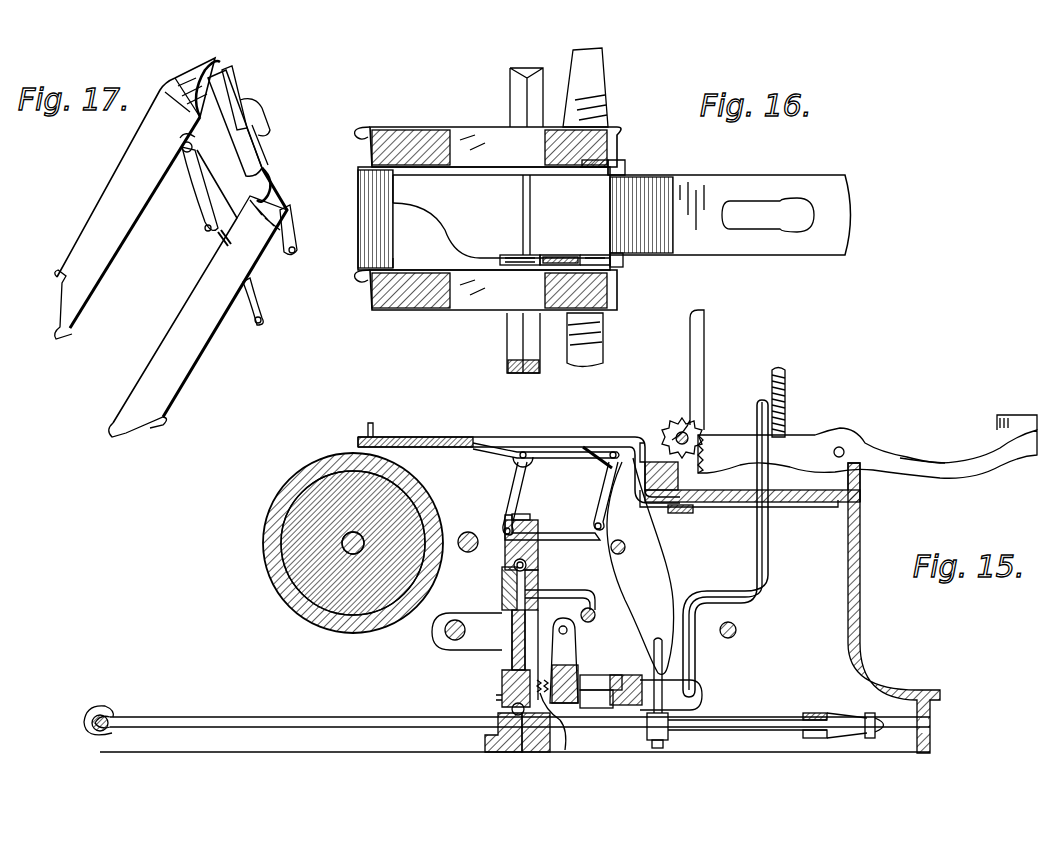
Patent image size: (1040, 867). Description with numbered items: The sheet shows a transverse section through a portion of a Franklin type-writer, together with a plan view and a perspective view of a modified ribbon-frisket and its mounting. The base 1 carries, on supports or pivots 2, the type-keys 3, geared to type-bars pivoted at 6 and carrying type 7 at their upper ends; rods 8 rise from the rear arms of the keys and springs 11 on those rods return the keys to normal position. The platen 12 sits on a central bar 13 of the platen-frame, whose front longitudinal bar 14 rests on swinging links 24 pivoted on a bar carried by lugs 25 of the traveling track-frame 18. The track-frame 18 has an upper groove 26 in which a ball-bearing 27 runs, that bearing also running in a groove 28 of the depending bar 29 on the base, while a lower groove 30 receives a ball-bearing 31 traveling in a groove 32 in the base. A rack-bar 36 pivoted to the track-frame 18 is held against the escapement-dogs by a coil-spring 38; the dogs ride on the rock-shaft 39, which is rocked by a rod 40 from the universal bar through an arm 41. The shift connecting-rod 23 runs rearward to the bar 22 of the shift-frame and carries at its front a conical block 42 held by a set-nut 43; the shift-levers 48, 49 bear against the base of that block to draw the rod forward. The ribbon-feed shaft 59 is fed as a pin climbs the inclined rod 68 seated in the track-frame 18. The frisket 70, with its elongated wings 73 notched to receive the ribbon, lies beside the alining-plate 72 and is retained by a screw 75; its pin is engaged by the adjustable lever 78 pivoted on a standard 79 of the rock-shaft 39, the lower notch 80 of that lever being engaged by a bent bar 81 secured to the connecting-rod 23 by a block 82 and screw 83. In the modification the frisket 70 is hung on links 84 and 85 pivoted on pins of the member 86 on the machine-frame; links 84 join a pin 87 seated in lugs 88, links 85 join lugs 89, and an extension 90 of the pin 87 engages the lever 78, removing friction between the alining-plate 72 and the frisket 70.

In FIG. 15, the base of the machine 1 is at (861, 538).
In FIG. 15, the supports or pivots 2 is at (842, 447).
In FIG. 15, the type-keys 3 is at (946, 478).
In FIG. 15, the pivot of type-bars 6 is at (689, 440).
In FIG. 15, the type 7 is at (702, 386).
In FIG. 15, the rods 8 is at (781, 372).
In FIG. 15, the springs 11 is at (786, 396).
In FIG. 15, the platen 12 is at (372, 595).
In FIG. 15, the central bar 13 is at (340, 545).
In FIG. 15, the front longitudinal bar 14 is at (470, 531).
In FIG. 15, the track-frame 18 is at (503, 606).
In FIG. 15, the bar 22 is at (106, 712).
In FIG. 15, the shift connecting-rod 23 is at (334, 717).
In FIG. 15, the swinging links 24 is at (447, 640).
In FIG. 15, the lugs 25 is at (478, 643).
In FIG. 15, the groove 26 is at (509, 576).
In FIG. 15, the ball-bearing 27 is at (512, 564).
In FIG. 15, the groove 28 is at (510, 547).
In FIG. 15, the depending bar 29 is at (539, 549).
In FIG. 15, the groove 30 is at (498, 700).
In FIG. 15, the ball-bearing 31 is at (496, 752).
In FIG. 15, the groove 32 is at (523, 752).
In FIG. 15, the rack-bar 36 is at (573, 656).
In FIG. 15, the coil-spring 38 is at (564, 748).
In FIG. 15, the rock-shaft 39 is at (623, 661).
In FIG. 15, the rod 40 is at (771, 586).
In FIG. 15, the arm or projection 41 is at (701, 696).
In FIG. 15, the conical block 42 is at (841, 720).
In FIG. 15, the set-nut 43 is at (871, 720).
In FIG. 15, the shift-lever 48 is at (811, 713).
In FIG. 15, the shift-lever 49 is at (812, 739).
In FIG. 15, the shaft 59 is at (736, 630).
In FIG. 15, the inclined rod 68 is at (572, 589).
In FIG. 17, the frisket 70 is at (232, 123).
In FIG. 15, the frisket 70 is at (478, 450).
In FIG. 16, the alining-plate 72 is at (712, 185).
In FIG. 15, the alining-plate 72 is at (514, 446).
In FIG. 17, the wings or extensions 73 is at (171, 247).
In FIG. 16, the wings or extensions 73 is at (437, 122).
In FIG. 15, the screw 75 is at (682, 513).
In FIG. 15, the adjustable lever 78 is at (650, 537).
In FIG. 15, the standard 79 is at (626, 546).
In FIG. 15, the notch 80 is at (650, 668).
In FIG. 17, the bent bar 81 is at (222, 240).
In FIG. 15, the bent bar 81 is at (666, 642).
In FIG. 15, the block 82 is at (648, 730).
In FIG. 15, the screw 83 is at (657, 742).
In FIG. 17, the links 84 is at (240, 130).
In FIG. 16, the links 84 is at (628, 176).
In FIG. 15, the links 84 is at (598, 502).
In FIG. 17, the links 85 is at (200, 212).
In FIG. 16, the links 85 is at (500, 258).
In FIG. 15, the links 85 is at (521, 483).
In FIG. 15, the frisket support 86 is at (546, 534).
In FIG. 17, the pin 87 is at (265, 165).
In FIG. 16, the pin 87 is at (622, 262).
In FIG. 17, the lugs 88 is at (205, 82).
In FIG. 16, the lugs 88 is at (610, 164).
In FIG. 15, the lugs 88 is at (601, 442).
In FIG. 17, the lugs 89 is at (182, 158).
In FIG. 16, the lugs 89 is at (526, 178).
In FIG. 15, the lugs 89 is at (518, 459).
In FIG. 17, the extension 90 is at (260, 104).